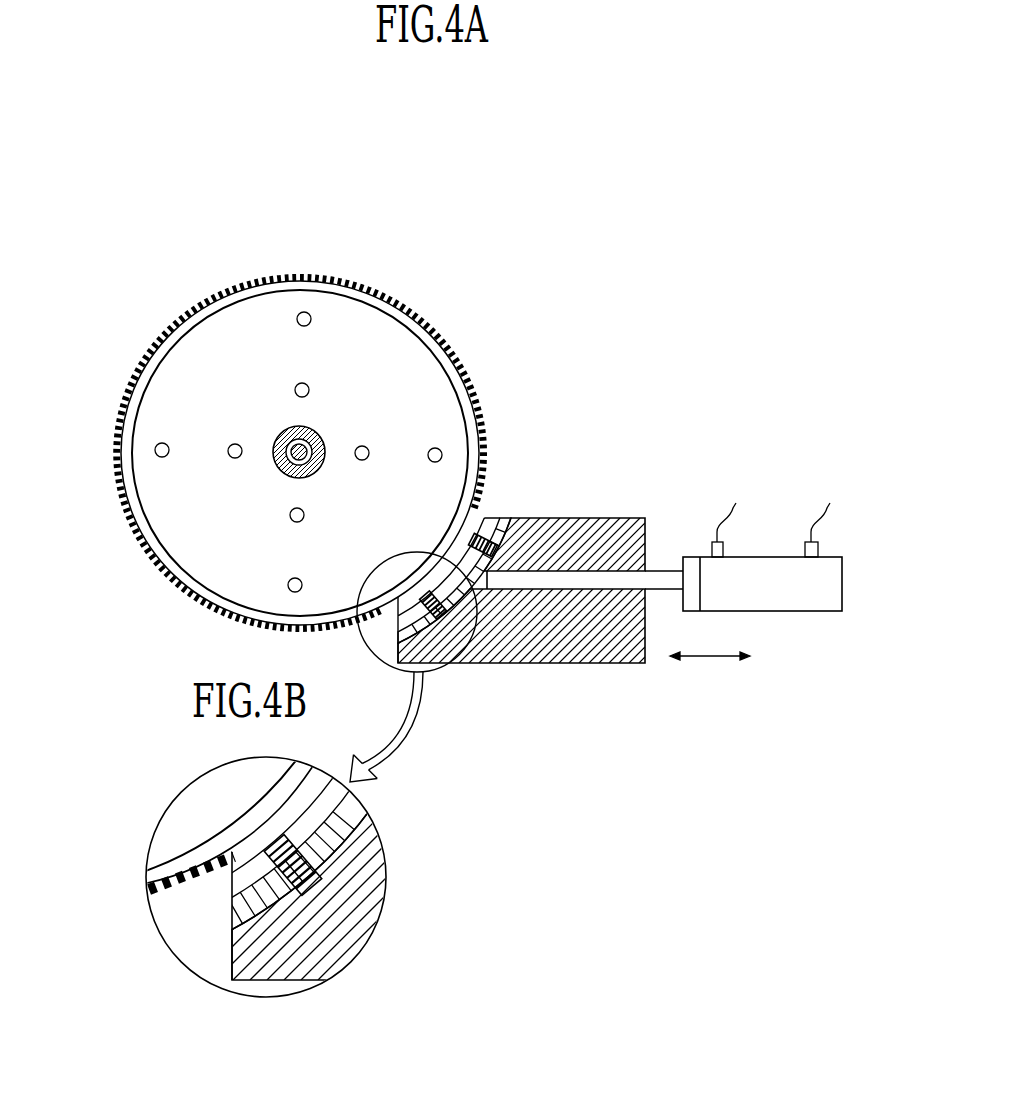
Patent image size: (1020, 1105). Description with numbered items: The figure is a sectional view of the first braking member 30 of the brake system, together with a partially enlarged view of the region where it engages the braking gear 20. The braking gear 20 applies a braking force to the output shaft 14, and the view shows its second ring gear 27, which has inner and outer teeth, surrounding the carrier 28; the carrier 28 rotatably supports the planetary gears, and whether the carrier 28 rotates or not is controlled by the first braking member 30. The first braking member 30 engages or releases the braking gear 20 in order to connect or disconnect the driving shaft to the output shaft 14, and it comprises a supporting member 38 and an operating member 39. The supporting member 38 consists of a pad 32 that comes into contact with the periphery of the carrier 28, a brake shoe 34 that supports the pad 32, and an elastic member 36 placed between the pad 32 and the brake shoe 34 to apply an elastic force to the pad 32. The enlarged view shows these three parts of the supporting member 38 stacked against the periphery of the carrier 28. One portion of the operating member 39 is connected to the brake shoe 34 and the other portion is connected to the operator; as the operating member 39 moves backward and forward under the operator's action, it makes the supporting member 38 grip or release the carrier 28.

In FIG. 4A, the output shaft 14 is at (283, 436).
In FIG. 4A, the braking gear 20 is at (351, 452).
In FIG. 4A, the second ring gear 27 is at (441, 333).
In FIG. 4A, the carrier 28 is at (432, 392).
In FIG. 4B, the carrier 28 is at (150, 862).
In FIG. 4A, the first braking member 30 is at (620, 567).
In FIG. 4A, the operating member 39 is at (786, 600).
In FIG. 4B, the pad 32 is at (233, 874).
In FIG. 4B, the brake shoe 34 is at (253, 935).
In FIG. 4B, the elastic member 36 is at (246, 920).
In FIG. 4B, the supporting member 38 is at (226, 593).